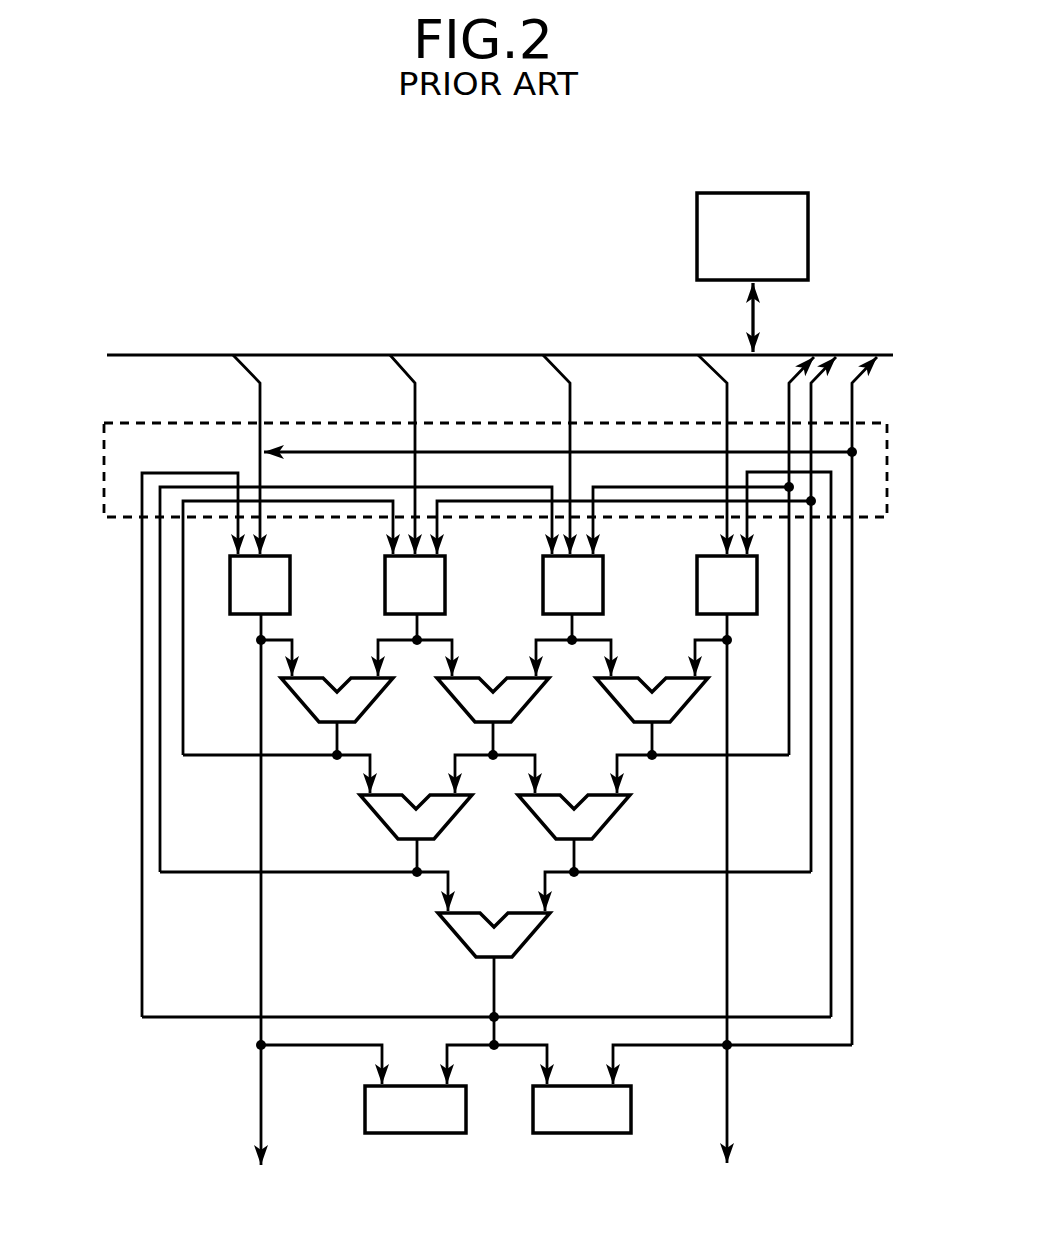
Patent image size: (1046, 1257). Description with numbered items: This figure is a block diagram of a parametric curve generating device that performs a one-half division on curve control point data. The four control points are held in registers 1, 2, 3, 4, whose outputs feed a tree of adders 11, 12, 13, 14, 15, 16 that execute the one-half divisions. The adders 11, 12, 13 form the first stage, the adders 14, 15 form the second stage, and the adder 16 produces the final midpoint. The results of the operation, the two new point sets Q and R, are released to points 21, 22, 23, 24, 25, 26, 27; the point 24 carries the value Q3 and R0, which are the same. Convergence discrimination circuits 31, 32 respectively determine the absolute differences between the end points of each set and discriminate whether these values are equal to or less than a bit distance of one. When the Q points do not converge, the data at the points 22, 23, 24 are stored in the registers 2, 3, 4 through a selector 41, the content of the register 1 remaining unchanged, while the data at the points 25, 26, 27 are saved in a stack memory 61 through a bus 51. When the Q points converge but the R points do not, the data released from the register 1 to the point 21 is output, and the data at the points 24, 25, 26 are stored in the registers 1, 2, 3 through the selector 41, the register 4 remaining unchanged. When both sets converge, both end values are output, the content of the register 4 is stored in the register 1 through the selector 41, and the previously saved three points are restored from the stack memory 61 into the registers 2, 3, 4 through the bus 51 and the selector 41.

The register 1 is at (230, 574).
The register 2 is at (385, 574).
The register 3 is at (543, 574).
The register 4 is at (697, 574).
The adder 11 is at (378, 705).
The adder 12 is at (533, 705).
The adder 13 is at (680, 676).
The adder 14 is at (445, 828).
The adder 15 is at (605, 828).
The adder 16 is at (525, 953).
The point 21 is at (258, 644).
The point 22 is at (333, 760).
The point 23 is at (413, 878).
The point 24 is at (495, 1050).
The point 25 is at (578, 878).
The point 26 is at (656, 760).
The point 27 is at (732, 645).
The convergence discrimination circuit 31 is at (410, 1135).
The convergence discrimination circuit 32 is at (580, 1135).
The selector 41 is at (188, 422).
The bus 51 is at (325, 353).
The stack memory 61 is at (765, 192).